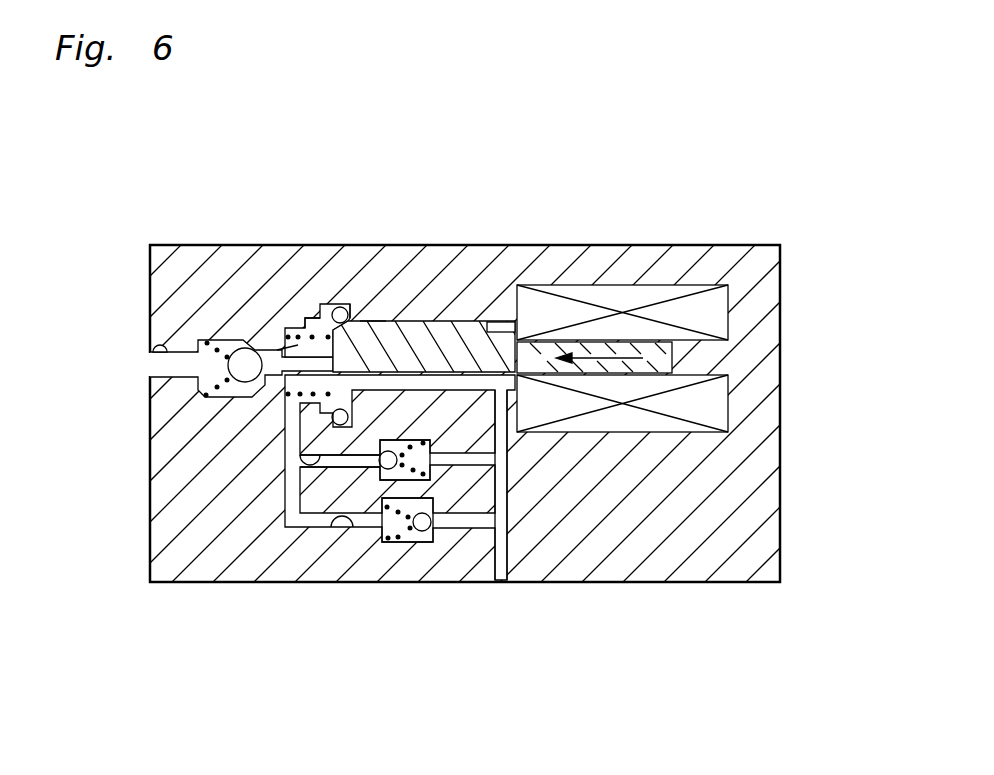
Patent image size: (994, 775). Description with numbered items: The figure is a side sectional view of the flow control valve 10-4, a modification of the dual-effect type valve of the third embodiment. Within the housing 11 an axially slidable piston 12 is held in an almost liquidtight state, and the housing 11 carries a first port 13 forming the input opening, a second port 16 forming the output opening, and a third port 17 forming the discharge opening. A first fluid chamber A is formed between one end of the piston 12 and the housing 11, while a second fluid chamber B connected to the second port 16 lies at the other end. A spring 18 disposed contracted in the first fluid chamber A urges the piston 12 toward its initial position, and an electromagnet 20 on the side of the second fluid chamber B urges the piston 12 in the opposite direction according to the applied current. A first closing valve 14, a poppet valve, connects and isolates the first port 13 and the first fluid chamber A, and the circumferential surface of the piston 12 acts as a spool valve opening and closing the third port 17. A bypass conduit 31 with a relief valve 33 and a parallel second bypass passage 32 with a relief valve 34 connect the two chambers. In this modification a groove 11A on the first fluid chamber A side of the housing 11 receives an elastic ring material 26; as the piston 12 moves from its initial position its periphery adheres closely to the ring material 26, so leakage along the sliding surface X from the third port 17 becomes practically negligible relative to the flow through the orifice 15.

The flow control valve 10-4 is at (652, 244).
The housing 11 is at (175, 296).
The groove 11A is at (303, 318).
The piston 12 is at (400, 337).
The first port 13 is at (150, 374).
The first closing valve 14 is at (241, 384).
The orifice 15 is at (318, 463).
The second port 16 is at (501, 580).
The third port 17 is at (372, 320).
The spring 18 is at (290, 333).
The electromagnet 20 is at (712, 308).
The elastic ring material 26 is at (336, 308).
The bypass conduit 31 is at (247, 399).
The second bypass passage 32 is at (353, 384).
The relief valve 33 is at (380, 463).
The relief valve 34 is at (420, 545).
The first fluid chamber A is at (297, 348).
The second fluid chamber B is at (491, 321).
The sliding surface X is at (350, 300).